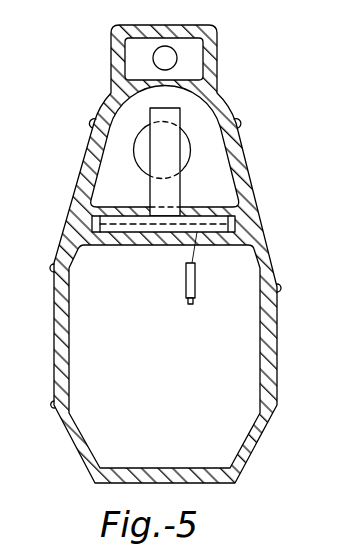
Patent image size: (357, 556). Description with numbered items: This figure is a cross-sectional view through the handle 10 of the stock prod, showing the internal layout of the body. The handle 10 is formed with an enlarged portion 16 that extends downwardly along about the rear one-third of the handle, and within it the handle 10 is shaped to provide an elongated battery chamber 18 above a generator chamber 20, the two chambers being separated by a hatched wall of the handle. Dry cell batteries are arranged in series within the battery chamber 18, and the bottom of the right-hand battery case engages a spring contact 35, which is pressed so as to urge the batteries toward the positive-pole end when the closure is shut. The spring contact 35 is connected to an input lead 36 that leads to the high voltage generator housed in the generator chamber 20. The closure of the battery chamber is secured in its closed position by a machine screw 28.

The handle 10 is at (304, 229).
The enlarged portion 16 is at (54, 348).
The battery chamber 18 is at (212, 131).
The generator chamber 20 is at (164, 356).
The spring contact 35 is at (177, 206).
The input lead 36 is at (197, 295).
The machine screw 28 is at (341, 549).